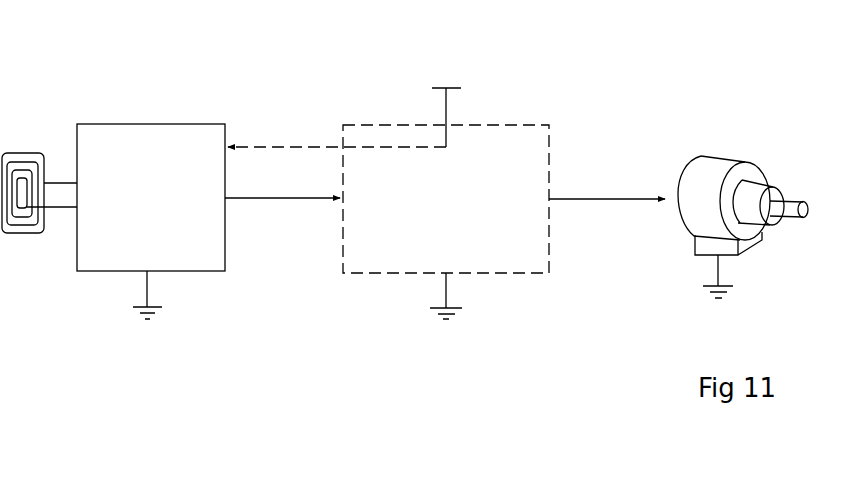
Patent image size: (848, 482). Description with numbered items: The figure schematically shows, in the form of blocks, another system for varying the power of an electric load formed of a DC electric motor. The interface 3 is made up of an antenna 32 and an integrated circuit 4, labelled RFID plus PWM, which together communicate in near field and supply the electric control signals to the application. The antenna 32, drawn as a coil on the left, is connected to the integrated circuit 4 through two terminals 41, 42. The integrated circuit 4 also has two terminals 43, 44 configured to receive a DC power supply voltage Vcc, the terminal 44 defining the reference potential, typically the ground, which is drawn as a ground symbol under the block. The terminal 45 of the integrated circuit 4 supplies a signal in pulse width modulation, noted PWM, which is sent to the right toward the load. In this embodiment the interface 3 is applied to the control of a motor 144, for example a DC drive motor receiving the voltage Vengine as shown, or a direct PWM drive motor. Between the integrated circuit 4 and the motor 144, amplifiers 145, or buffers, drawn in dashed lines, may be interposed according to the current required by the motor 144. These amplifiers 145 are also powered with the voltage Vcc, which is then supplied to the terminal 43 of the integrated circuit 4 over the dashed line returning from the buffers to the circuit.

The interface 3 is at (108, 350).
The integrated circuit 4 is at (145, 124).
The antenna 32 is at (19, 160).
The terminal 41 is at (62, 183).
The terminal 42 is at (60, 208).
The terminal 43 is at (226, 141).
The terminal 44 is at (150, 288).
The terminal 45 is at (227, 199).
The motor 144 is at (737, 150).
The amplifiers 145 is at (520, 125).